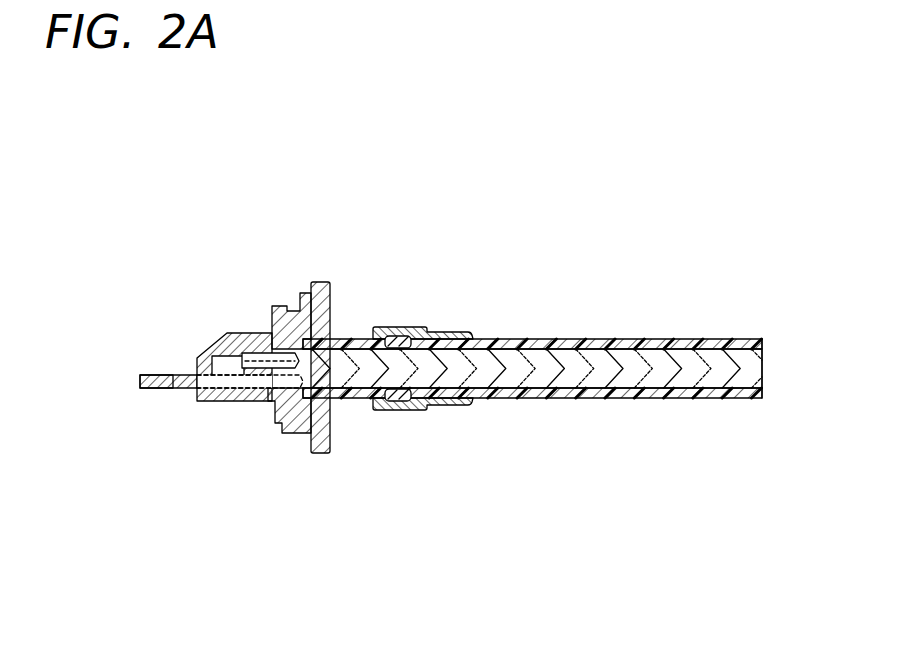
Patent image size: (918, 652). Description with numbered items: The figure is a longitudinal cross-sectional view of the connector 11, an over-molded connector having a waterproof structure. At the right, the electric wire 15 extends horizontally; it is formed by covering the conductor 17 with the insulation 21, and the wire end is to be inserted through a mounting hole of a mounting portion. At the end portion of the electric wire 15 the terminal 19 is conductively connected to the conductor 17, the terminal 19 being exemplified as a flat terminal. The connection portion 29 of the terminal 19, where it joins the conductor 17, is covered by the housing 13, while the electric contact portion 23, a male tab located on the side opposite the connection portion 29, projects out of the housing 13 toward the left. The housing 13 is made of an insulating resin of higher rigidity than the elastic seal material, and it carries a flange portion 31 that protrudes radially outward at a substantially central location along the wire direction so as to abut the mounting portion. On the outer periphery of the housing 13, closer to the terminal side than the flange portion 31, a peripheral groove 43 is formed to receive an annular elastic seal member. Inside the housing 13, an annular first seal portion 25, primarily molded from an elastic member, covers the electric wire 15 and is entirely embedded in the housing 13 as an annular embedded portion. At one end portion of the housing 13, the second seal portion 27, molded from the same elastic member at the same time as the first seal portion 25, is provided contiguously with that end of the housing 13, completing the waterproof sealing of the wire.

The connector 11 is at (255, 203).
The housing 13 is at (230, 330).
The electric wire 15 is at (755, 338).
The conductor 17 is at (751, 366).
The terminal 19 is at (143, 365).
The insulation 21 is at (623, 341).
The electric contact portion 23 is at (150, 390).
The first seal portion 25 is at (401, 347).
The second seal portion 27 is at (458, 328).
The connection portion 29 is at (262, 402).
The flange portion 31 is at (317, 283).
The peripheral groove 43 is at (293, 303).